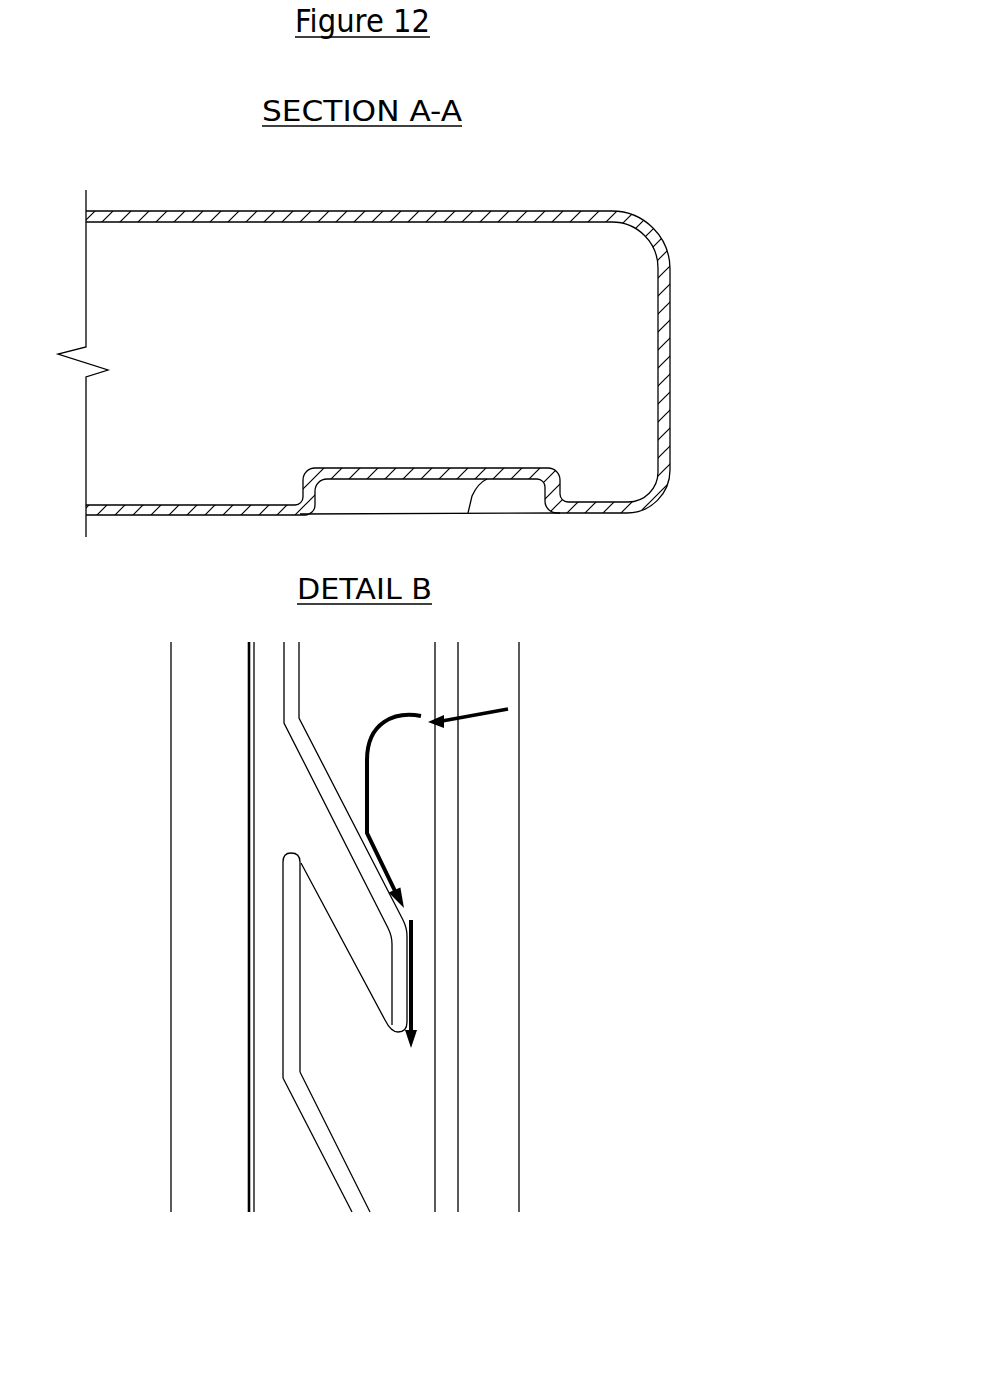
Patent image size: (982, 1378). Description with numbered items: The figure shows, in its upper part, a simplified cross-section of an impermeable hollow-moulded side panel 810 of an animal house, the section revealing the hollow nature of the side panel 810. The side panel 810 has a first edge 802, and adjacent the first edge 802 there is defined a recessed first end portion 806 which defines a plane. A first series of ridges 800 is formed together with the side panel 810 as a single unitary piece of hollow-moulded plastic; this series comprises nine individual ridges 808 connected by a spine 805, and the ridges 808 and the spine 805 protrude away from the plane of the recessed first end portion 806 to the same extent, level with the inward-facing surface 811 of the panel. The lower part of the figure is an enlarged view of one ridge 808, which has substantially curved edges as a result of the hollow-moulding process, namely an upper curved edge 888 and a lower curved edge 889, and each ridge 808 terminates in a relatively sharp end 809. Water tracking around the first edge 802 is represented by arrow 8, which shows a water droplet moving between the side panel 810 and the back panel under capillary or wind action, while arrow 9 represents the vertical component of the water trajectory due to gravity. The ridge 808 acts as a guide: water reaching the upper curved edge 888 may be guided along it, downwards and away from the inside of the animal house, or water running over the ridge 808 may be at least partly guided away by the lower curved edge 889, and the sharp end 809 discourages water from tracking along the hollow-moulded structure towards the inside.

The first edge 802 is at (670, 362).
The recessed first end portion 806 is at (418, 468).
The side panel 810 is at (377, 359).
The inward-facing surface 811 is at (253, 513).
The first series of ridges 800 is at (365, 511).
The ridge 808 is at (393, 495).
The spine 805 is at (268, 882).
The lower curved edge 889 is at (337, 935).
The sharp end 809 is at (392, 1018).
The arrow 9 is at (367, 805).
The arrow 8 is at (495, 718).
The upper curved edge 888 is at (367, 872).